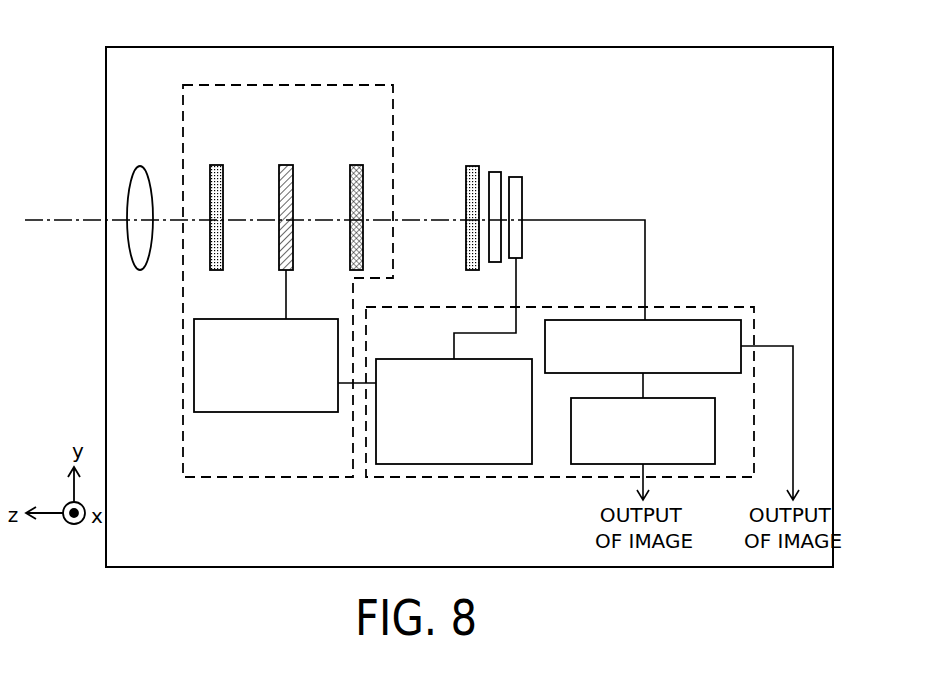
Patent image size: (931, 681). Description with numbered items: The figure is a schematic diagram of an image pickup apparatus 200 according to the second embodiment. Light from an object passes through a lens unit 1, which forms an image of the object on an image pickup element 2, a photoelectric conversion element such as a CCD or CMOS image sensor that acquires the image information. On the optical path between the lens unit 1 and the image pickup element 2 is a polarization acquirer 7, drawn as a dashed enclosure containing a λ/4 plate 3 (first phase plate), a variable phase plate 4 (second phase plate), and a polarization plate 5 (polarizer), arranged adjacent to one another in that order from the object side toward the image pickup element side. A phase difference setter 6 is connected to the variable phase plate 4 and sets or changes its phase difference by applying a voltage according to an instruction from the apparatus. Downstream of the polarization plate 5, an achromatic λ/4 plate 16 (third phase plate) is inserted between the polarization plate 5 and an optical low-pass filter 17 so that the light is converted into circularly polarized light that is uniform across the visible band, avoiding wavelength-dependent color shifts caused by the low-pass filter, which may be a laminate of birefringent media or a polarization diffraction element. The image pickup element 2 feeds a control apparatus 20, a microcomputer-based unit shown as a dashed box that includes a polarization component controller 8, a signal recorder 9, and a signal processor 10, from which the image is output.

The image pickup apparatus 200 is at (482, 36).
The lens unit 1 is at (146, 191).
The image pickup element 2 is at (523, 194).
The λ/4 plate 3 is at (218, 173).
The variable phase plate 4 is at (286, 174).
The polarization plate 5 is at (357, 172).
The phase difference setter 6 is at (286, 412).
The polarization acquirer 7 is at (390, 109).
The polarization component controller 8 is at (434, 464).
The signal recorder 9 is at (698, 320).
The signal processor 10 is at (571, 439).
The achromatic λ/4 plate 16 is at (466, 199).
The optical low-pass filter 17 is at (492, 172).
The control apparatus 20 is at (736, 307).